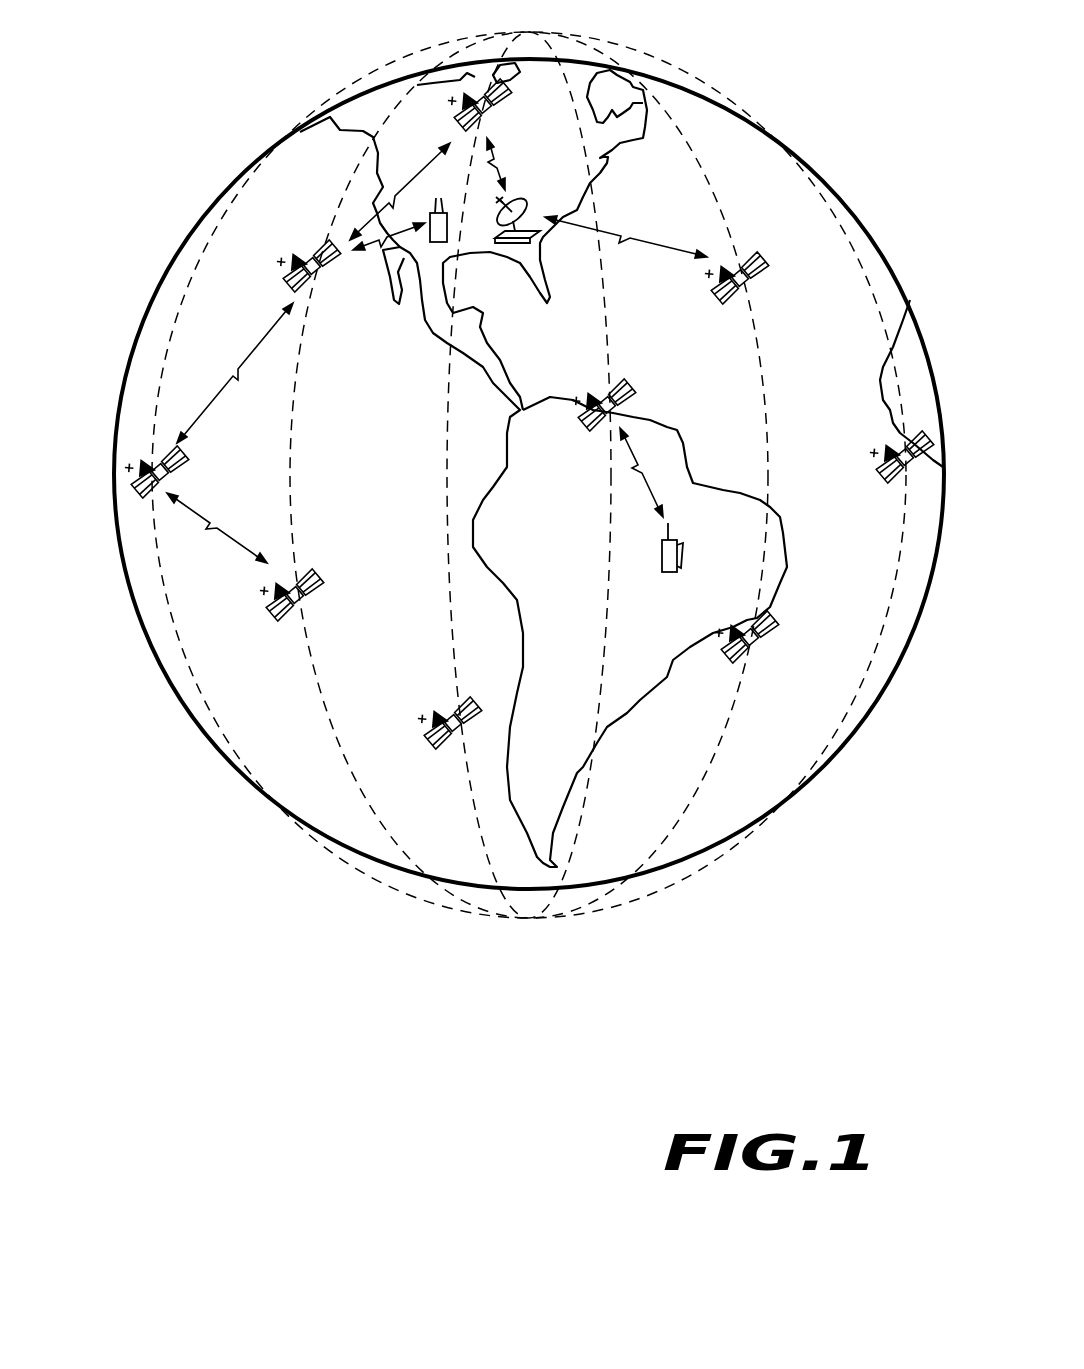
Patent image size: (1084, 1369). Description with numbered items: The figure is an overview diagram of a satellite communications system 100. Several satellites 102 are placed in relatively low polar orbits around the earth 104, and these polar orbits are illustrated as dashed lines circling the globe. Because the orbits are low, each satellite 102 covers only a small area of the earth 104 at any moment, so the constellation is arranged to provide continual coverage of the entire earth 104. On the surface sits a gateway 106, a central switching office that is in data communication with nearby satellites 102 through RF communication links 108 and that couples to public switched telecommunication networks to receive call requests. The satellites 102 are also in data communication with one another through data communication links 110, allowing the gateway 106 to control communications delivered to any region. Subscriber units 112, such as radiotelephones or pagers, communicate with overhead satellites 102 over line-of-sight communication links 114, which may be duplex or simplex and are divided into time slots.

The satellite communications system 100 is at (528, 1046).
The satellite 102 is at (181, 458).
The earth 104 is at (864, 224).
The gateway 106 is at (512, 243).
The RF communication link 108 is at (497, 165).
The data communication link 110 is at (377, 212).
The subscriber unit 112 is at (697, 567).
The communication link 114 is at (693, 413).